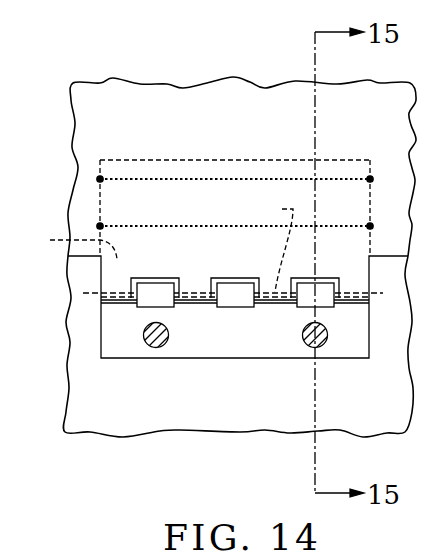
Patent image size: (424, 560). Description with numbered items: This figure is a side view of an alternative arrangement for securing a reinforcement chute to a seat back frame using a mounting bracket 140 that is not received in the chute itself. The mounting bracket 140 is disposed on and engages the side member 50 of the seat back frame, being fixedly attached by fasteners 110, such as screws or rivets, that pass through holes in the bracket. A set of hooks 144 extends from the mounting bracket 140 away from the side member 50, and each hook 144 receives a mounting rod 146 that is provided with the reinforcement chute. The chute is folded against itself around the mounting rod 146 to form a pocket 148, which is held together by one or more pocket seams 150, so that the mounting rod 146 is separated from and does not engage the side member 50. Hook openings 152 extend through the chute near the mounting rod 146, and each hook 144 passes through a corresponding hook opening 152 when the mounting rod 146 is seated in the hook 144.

The seat back side member 50 is at (175, 418).
The fastener 110 is at (155, 347).
The mounting bracket 140 is at (286, 354).
The hook 144 is at (157, 307).
The mounting rod 146 is at (269, 243).
The pocket 148 is at (67, 244).
The pocket seam 150 is at (173, 226).
The hook opening 152 is at (155, 278).